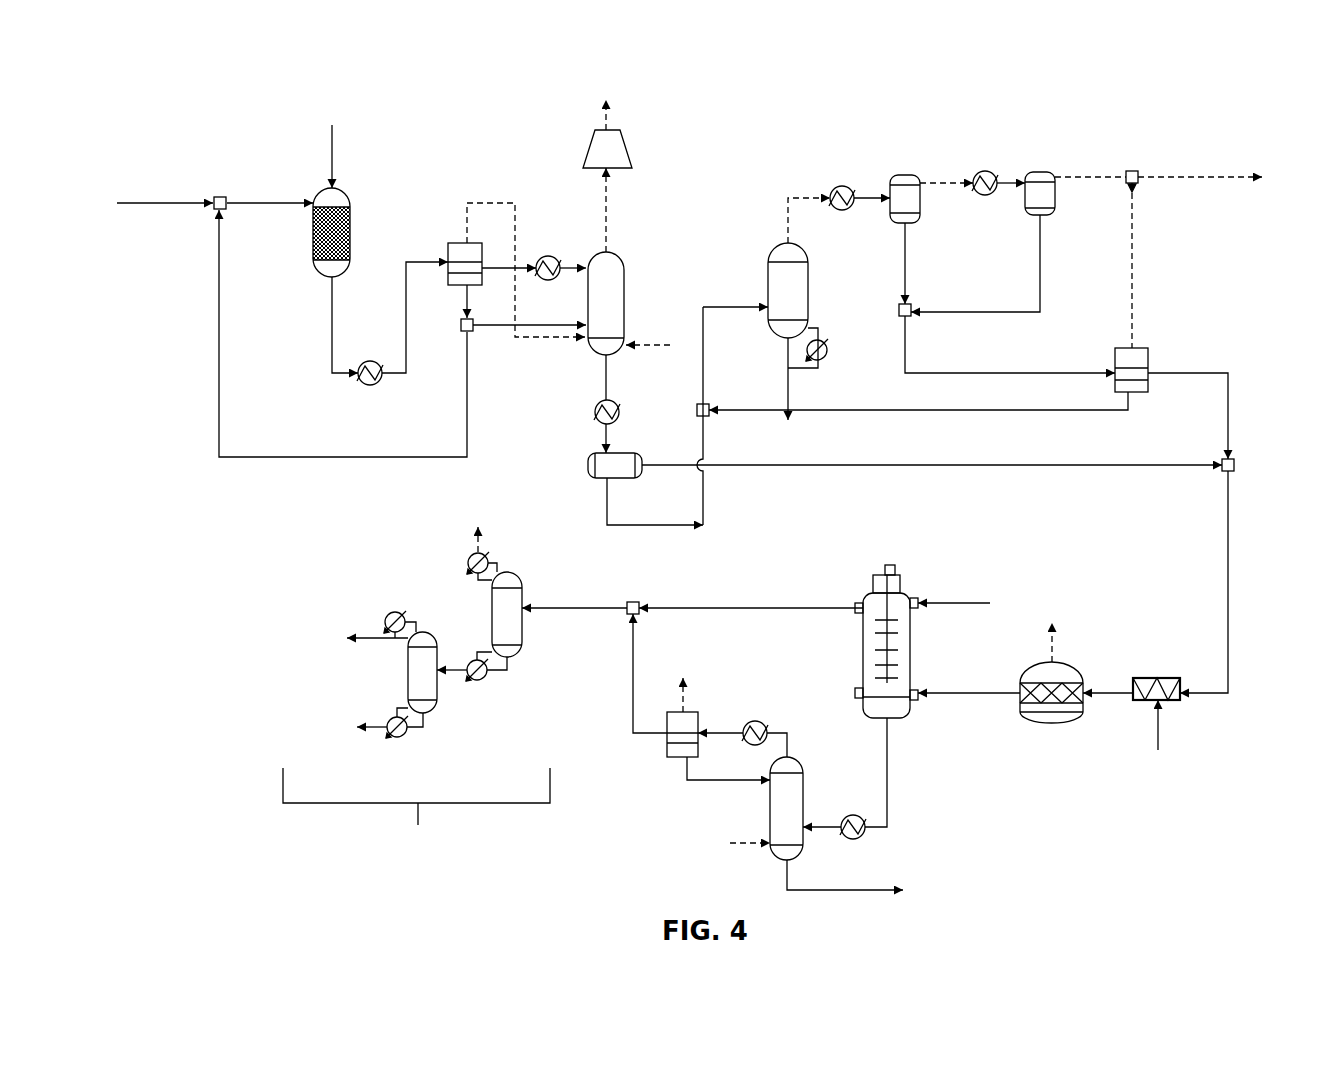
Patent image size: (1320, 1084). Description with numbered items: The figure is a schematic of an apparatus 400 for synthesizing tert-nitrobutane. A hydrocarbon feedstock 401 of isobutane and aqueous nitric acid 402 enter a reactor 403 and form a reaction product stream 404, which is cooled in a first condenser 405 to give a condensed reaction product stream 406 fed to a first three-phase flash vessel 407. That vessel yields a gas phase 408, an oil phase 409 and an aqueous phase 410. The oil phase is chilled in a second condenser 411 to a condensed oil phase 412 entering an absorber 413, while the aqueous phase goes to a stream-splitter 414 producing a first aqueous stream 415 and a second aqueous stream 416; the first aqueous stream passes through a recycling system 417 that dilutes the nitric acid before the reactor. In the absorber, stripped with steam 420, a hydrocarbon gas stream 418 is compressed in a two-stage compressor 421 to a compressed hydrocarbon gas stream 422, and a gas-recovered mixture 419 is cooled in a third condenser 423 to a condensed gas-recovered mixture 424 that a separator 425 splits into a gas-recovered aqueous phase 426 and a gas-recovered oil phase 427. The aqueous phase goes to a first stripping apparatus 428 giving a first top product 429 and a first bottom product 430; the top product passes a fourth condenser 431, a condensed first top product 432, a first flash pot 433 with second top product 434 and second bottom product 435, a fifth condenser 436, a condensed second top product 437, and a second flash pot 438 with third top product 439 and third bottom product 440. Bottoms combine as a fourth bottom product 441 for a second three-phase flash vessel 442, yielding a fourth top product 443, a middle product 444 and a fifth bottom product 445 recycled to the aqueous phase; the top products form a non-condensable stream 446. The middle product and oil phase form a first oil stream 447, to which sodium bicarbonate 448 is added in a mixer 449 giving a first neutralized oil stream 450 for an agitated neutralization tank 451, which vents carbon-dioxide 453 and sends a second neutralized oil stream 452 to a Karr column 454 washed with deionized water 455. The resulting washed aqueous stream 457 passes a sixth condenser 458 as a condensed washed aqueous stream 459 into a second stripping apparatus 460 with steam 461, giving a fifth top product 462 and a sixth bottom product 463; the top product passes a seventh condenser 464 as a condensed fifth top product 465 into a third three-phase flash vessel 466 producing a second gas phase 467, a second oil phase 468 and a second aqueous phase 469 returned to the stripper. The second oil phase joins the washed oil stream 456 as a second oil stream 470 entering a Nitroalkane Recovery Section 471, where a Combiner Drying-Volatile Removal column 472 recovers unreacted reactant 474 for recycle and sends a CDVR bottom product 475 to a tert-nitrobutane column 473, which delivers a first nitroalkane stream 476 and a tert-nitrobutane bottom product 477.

The apparatus 400 is at (200, 118).
The hydrocarbon feedstock 401 is at (333, 132).
The aqueous nitric acid 402 is at (272, 203).
The reactor 403 is at (348, 207).
The reaction product stream 404 is at (332, 333).
The first condenser 405 is at (365, 385).
The condensed reaction product stream 406 is at (392, 376).
The first three-phase flash vessel 407 is at (448, 256).
The gas phase 408 is at (480, 203).
The oil phase 409 is at (488, 203).
The aqueous phase 410 is at (468, 297).
The second condenser 411 is at (545, 255).
The condensed oil phase 412 is at (575, 262).
The absorber 413 is at (624, 305).
The stream-splitter 414 is at (461, 327).
The first aqueous stream 415 is at (468, 380).
The second aqueous stream 416 is at (525, 325).
The recycling system 417 is at (218, 214).
The hydrocarbon gas stream 418 is at (608, 200).
The gas-recovered mixture 419 is at (607, 392).
The steam 420 is at (645, 345).
The two-stage compressor 421 is at (620, 150).
The compressed hydrocarbon gas stream 422 is at (609, 110).
The third condenser 423 is at (648, 406).
The condensed gas-recovered mixture 424 is at (603, 445).
The separator 425 is at (587, 463).
The gas-recovered aqueous phase 426 is at (607, 505).
The gas-recovered oil phase 427 is at (672, 465).
The first stripping apparatus 428 is at (808, 260).
The first top product 429 is at (786, 210).
The first bottom product 430 is at (790, 385).
The fourth condenser 431 is at (838, 186).
The condensed first top product 432 is at (863, 196).
The first flash pot 433 is at (900, 175).
The second top product 434 is at (928, 182).
The second bottom product 435 is at (905, 270).
The fifth condenser 436 is at (983, 195).
The condensed second top product 437 is at (996, 172).
The second flash pot 438 is at (1040, 172).
The third top product 439 is at (1080, 177).
The third bottom product 440 is at (1040, 275).
The fourth bottom product 441 is at (955, 373).
The second three-phase flash vessel 442 is at (1148, 350).
The fourth top product 443 is at (1132, 270).
The middle product 444 is at (1195, 373).
The fifth bottom product 445 is at (1070, 410).
The non-condensable stream 446 is at (1170, 177).
The first oil stream 447 is at (1229, 560).
The sodium bicarbonate 448 is at (1159, 728).
The mixer 449 is at (1150, 678).
The first neutralized oil stream 450 is at (1076, 723).
The neutralization tank 451 is at (1075, 662).
The second neutralized oil stream 452 is at (990, 692).
The carbon-dioxide 453 is at (1050, 640).
The Karr column 454 is at (937, 633).
The deionized water 455 is at (960, 603).
The washed oil stream 456 is at (722, 608).
The washed aqueous stream 457 is at (888, 765).
The sixth condenser 458 is at (866, 815).
The condensed washed aqueous stream 459 is at (824, 828).
The second stripping apparatus 460 is at (796, 757).
The steam 461 is at (760, 845).
The fifth top product 462 is at (787, 740).
The sixth bottom product 463 is at (870, 890).
The seventh condenser 464 is at (765, 724).
The condensed fifth top product 465 is at (722, 732).
The third three-phase flash vessel 466 is at (667, 757).
The second gas phase 467 is at (682, 700).
The second oil phase 468 is at (633, 690).
The second aqueous phase 469 is at (746, 782).
The second oil stream 470 is at (585, 608).
The Nitroalkane Recovery Section 471 is at (416, 815).
The Combiner Drying-Volatile Removal column 472 is at (522, 585).
The tert-nitrobutane column 473 is at (437, 632).
The unreacted reactant 474 is at (478, 548).
The CDVR bottom product 475 is at (456, 672).
The first nitroalkane stream 476 is at (376, 637).
The tert-nitrobutane bottom product 477 is at (382, 737).